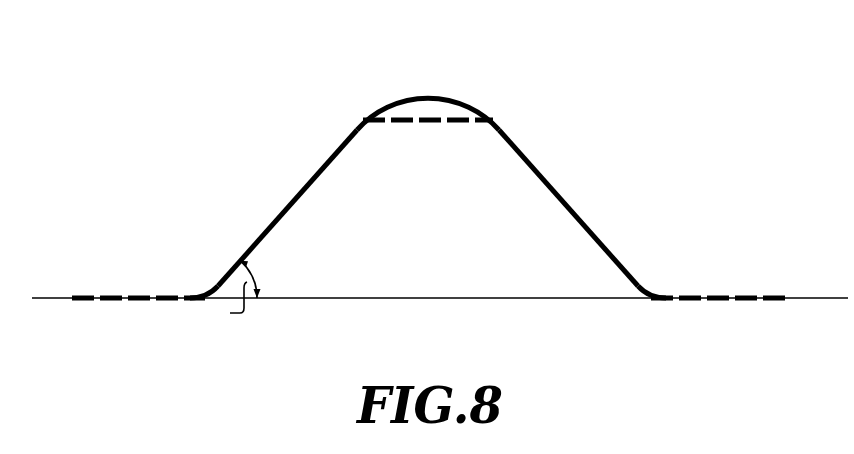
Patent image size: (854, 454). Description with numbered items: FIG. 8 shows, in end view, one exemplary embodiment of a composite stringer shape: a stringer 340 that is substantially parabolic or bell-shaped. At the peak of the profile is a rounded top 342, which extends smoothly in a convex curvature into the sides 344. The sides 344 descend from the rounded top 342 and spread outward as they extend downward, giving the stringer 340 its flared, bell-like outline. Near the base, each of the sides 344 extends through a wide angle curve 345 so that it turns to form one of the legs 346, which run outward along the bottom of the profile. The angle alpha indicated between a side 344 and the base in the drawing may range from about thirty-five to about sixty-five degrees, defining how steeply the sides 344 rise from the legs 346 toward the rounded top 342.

The stringer 340 is at (440, 177).
The rounded top 342 is at (427, 98).
The sides 344 is at (286, 200).
The wide angle curve 345 is at (200, 292).
The legs 346 is at (122, 297).